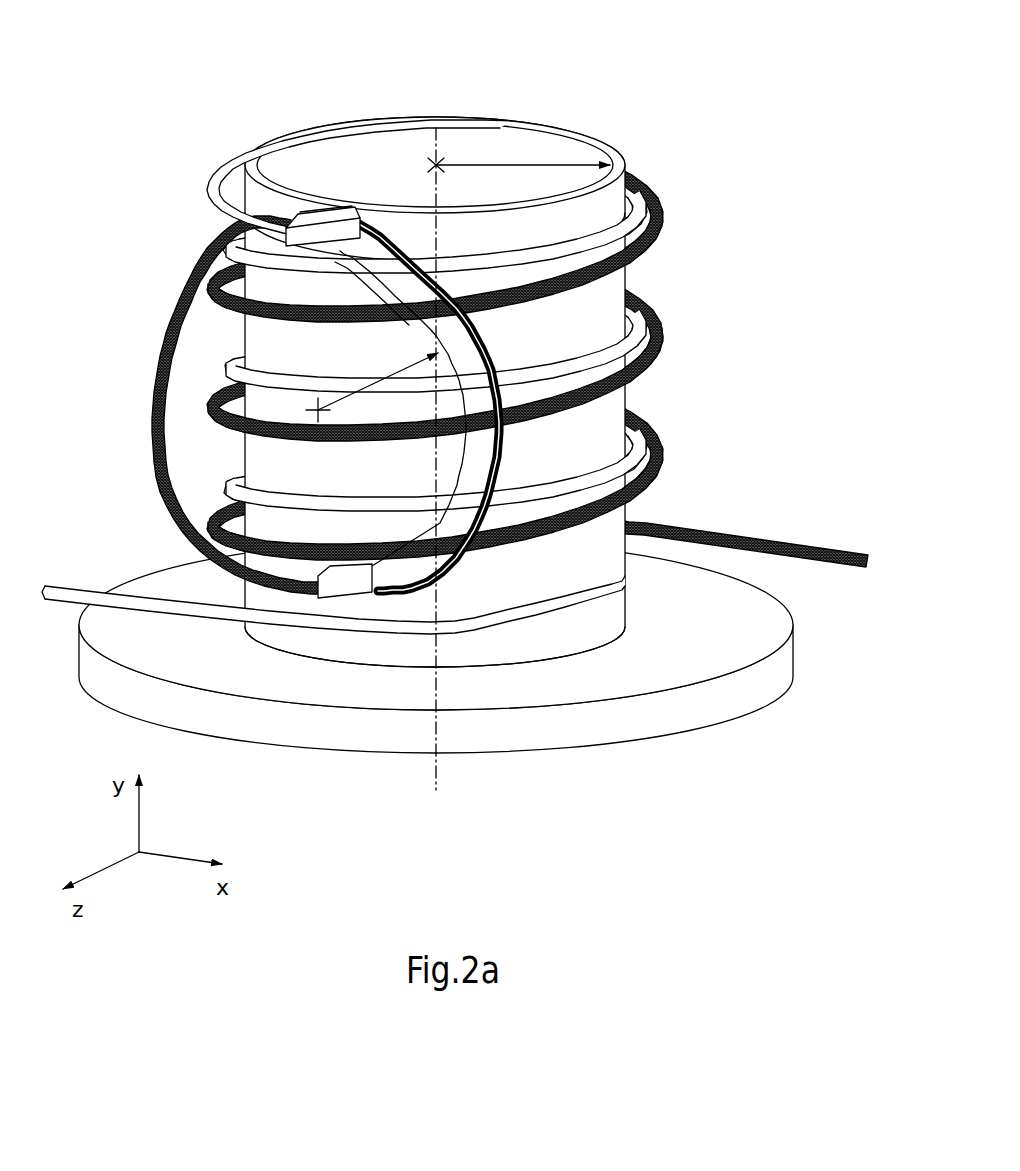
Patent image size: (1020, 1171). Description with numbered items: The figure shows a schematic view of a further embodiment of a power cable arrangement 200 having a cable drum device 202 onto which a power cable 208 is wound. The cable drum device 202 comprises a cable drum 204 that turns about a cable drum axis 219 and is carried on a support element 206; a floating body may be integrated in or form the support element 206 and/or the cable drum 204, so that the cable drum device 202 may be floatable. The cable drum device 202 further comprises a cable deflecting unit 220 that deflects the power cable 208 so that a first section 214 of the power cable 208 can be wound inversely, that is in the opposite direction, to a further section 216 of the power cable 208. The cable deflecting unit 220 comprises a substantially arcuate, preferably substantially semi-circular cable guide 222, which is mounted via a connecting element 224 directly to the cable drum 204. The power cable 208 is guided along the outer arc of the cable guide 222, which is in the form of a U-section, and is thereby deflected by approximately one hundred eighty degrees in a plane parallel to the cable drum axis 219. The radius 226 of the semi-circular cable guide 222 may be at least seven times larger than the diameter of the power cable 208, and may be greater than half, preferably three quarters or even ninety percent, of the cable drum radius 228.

The power cable arrangement 200 is at (733, 86).
The cable drum device 202 is at (455, 372).
The cable drum 204 is at (612, 152).
The support element 206 is at (706, 708).
The power cable 208 is at (268, 309).
The first section 214 is at (212, 185).
The further section 216 is at (214, 296).
The cable drum axis 219 is at (436, 770).
The cable deflecting unit 220 is at (347, 186).
The cable guide 222 is at (378, 255).
The connecting element 224 is at (315, 210).
The radius 226 is at (392, 380).
The cable drum radius 228 is at (527, 160).